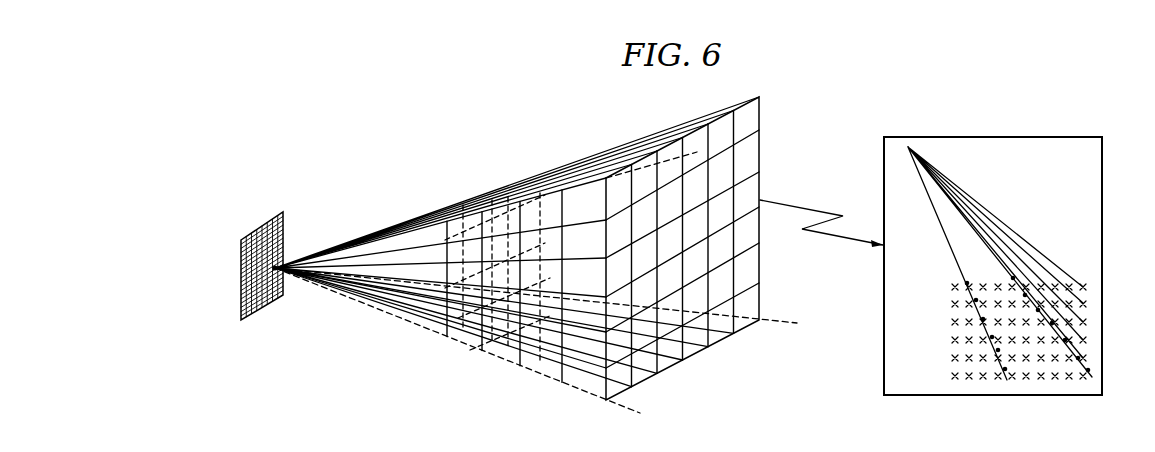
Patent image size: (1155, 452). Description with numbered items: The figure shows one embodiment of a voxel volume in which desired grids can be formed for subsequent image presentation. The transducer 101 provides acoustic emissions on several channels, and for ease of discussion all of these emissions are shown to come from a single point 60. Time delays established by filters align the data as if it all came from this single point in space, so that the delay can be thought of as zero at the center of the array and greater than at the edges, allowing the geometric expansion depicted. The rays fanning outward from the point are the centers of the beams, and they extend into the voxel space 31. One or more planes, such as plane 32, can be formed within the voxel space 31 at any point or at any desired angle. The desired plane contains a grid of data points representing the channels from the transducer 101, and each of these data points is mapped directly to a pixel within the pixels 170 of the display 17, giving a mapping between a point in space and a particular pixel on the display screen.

The display 17 is at (1103, 172).
The voxel space 31 is at (480, 192).
The plane 32 is at (450, 271).
The single point 60 is at (283, 238).
The transducer 101 is at (241, 257).
The pixels 170 is at (945, 281).